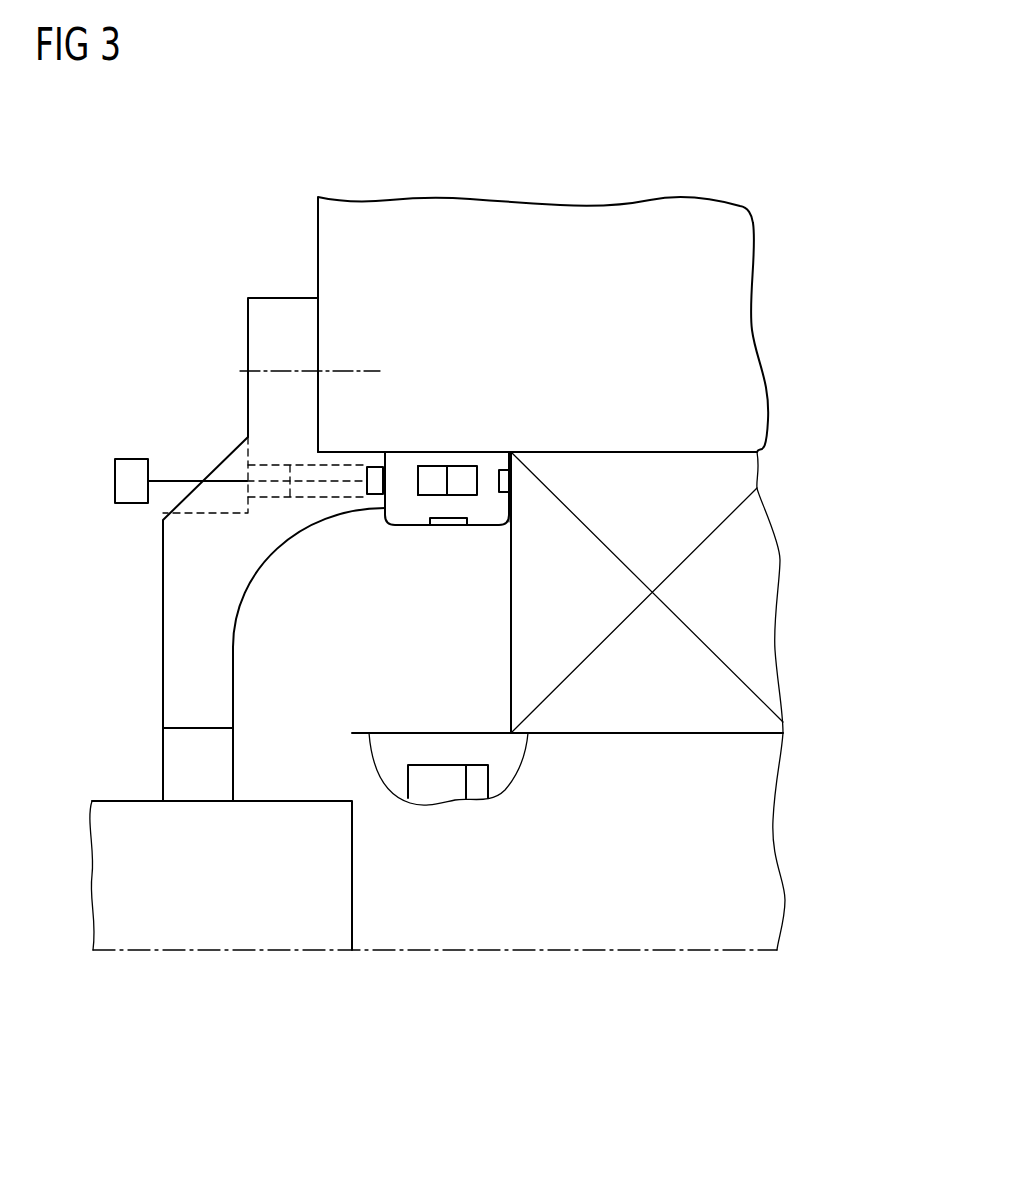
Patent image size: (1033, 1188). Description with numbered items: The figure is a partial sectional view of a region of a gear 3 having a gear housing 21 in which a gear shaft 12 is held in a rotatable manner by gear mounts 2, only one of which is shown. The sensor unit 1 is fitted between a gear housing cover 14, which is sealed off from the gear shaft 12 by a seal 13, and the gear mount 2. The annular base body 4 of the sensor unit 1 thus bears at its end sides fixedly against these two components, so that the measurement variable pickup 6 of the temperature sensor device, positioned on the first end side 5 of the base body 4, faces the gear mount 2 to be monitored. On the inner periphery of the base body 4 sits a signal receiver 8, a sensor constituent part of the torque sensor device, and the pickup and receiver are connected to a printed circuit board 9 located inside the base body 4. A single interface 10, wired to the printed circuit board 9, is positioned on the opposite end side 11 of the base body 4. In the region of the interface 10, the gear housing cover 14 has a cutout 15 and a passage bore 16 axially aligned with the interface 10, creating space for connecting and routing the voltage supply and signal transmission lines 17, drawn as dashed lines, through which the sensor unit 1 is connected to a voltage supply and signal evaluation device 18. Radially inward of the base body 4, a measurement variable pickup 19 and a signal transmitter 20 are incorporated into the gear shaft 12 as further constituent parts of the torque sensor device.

The sensor unit 1 is at (494, 452).
The gear mount 2 is at (767, 565).
The gear 3 is at (750, 171).
The annular base body 4 is at (470, 457).
The first end side 5 is at (513, 498).
The measurement variable pickup of the temperature sensor device 6 is at (512, 483).
The signal receiver 8 is at (445, 528).
The printed circuit board 9 is at (436, 472).
The interface 10 is at (373, 467).
The end side 11 is at (386, 514).
The gear shaft 12 is at (212, 943).
The seal 13 is at (180, 763).
The gear housing cover 14 is at (180, 648).
The cutout 15 is at (383, 457).
The passage bore 16 is at (305, 470).
The voltage supply and signal transmission lines 17 is at (167, 480).
The voltage supply and signal evaluation device 18 is at (115, 482).
The measurement variable pickup 19 is at (435, 792).
The signal transmitter 20 is at (477, 792).
The gear housing 21 is at (615, 218).